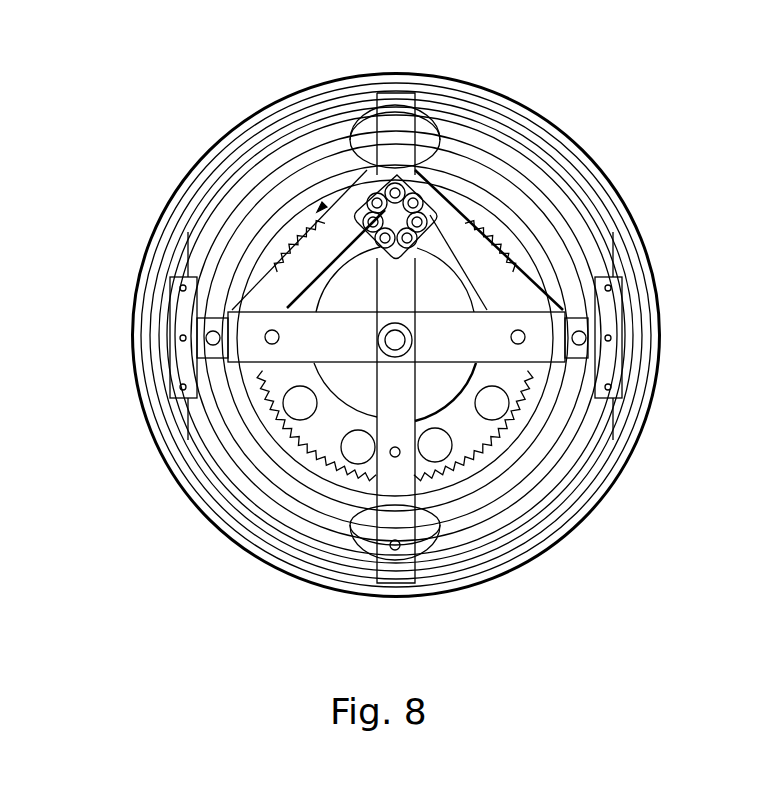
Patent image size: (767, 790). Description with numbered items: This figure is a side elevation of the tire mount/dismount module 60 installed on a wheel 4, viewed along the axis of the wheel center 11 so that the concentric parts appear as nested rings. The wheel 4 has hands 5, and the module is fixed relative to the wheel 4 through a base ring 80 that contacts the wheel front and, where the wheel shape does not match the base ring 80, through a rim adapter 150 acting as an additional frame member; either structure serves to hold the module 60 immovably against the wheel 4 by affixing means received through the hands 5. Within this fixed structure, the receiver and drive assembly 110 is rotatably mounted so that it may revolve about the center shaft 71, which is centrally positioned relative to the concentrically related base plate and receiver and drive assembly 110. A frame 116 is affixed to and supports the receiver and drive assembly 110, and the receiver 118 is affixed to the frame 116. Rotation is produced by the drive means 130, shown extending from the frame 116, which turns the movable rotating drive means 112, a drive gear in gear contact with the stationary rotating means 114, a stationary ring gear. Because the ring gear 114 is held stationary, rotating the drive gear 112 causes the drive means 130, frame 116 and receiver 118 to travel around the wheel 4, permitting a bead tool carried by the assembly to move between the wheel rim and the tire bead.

The wheel 4 is at (323, 75).
The hand 5 is at (453, 213).
The center 11 is at (383, 412).
The tire mount/dismount module 60 is at (20, 148).
The center shaft 71 is at (386, 341).
The base ring 80 is at (465, 515).
The receiver and drive assembly 110 is at (556, 452).
The movable rotating drive means 112 is at (452, 130).
The stationary rotating means 114 is at (527, 253).
The frame 116 is at (330, 240).
The receiver 118 is at (307, 337).
The drive means 130 is at (430, 228).
The rim adapter 150 is at (618, 262).